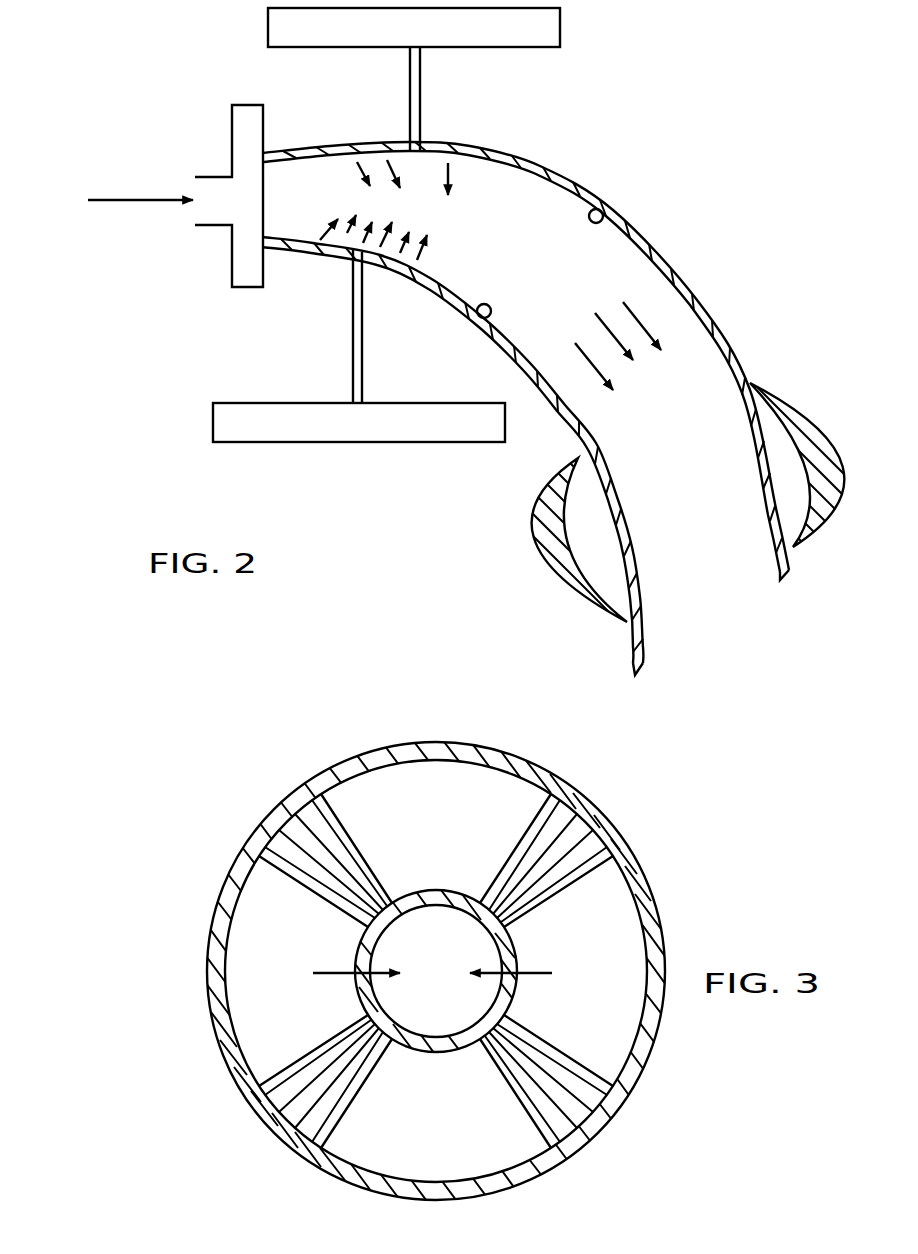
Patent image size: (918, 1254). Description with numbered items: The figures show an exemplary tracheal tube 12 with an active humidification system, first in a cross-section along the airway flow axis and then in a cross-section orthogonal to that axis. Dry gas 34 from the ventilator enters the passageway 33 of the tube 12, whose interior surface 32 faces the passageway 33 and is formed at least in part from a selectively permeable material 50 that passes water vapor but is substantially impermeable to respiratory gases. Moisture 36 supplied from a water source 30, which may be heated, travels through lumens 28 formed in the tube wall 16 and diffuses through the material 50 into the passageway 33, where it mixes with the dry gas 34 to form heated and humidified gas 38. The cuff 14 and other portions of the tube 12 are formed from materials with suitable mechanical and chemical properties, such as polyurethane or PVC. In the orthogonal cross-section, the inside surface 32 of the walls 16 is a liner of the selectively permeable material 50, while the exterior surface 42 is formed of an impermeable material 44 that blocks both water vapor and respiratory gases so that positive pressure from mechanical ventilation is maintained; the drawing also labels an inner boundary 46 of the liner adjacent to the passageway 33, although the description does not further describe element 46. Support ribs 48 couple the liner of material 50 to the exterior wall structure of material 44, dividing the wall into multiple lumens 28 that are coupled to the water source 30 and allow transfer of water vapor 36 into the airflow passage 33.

In FIG. 2, the tracheal tube 12 is at (170, 96).
In FIG. 2, the cuff 14 is at (540, 557).
In FIG. 2, the tube wall 16 is at (665, 250).
In FIG. 3, the tube wall 16 is at (203, 1060).
In FIG. 2, the lumen 28 is at (410, 92).
In FIG. 3, the lumen 28 is at (449, 840).
In FIG. 2, the water source 30 is at (560, 27).
In FIG. 2, the interior surface 32 is at (606, 205).
In FIG. 2, the passageway 33 is at (713, 553).
In FIG. 3, the passageway 33 is at (449, 965).
In FIG. 2, the dry gas 34 is at (131, 200).
In FIG. 2, the moisture 36 is at (333, 233).
In FIG. 3, the moisture 36 is at (336, 973).
In FIG. 2, the heated/humidified gas 38 is at (610, 335).
In FIG. 3, the exterior surface 42 is at (223, 882).
In FIG. 3, the impermeable material 44 is at (355, 1177).
In FIG. 3, the hub inner wall 46 is at (466, 1020).
In FIG. 3, the support rib 48 is at (566, 877).
In FIG. 3, the selectively permeable material 50 is at (417, 895).